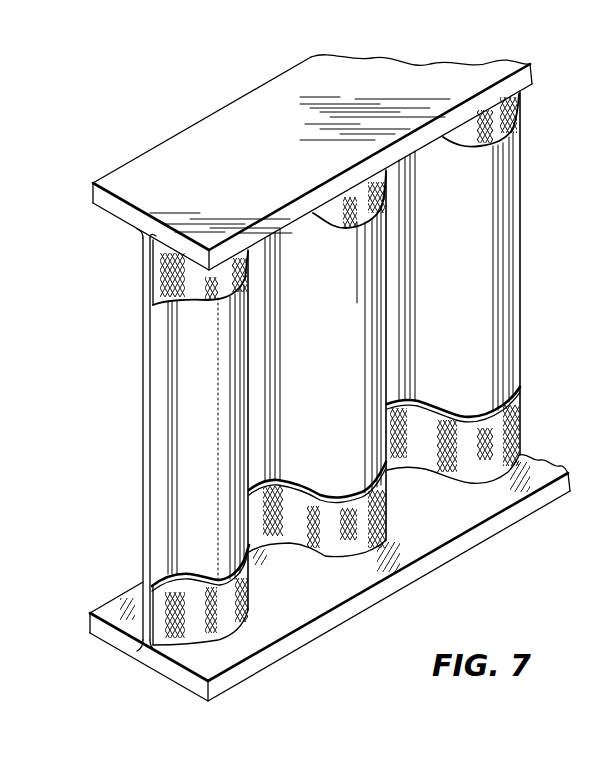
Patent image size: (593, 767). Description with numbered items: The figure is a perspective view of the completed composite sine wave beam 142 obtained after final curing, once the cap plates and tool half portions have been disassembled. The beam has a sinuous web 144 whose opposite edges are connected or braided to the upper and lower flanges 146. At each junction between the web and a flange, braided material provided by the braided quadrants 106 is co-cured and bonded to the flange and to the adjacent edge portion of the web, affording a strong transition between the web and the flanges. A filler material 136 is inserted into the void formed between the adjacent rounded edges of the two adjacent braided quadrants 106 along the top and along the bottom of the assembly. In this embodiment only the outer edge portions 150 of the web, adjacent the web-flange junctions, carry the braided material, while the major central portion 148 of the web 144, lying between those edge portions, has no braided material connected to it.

The composite sine wave beam 142 is at (380, 67).
The flanges 146 is at (187, 131).
The sinuous web 144 is at (192, 485).
The major central portion 148 is at (141, 415).
The opposite edge portions 150 is at (141, 271).
The filler material 136 is at (148, 238).
The braided quadrants 106 is at (182, 296).